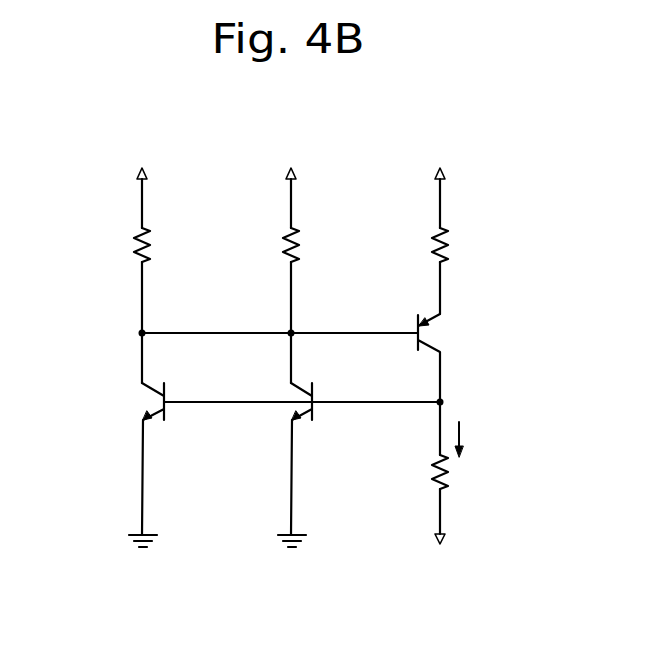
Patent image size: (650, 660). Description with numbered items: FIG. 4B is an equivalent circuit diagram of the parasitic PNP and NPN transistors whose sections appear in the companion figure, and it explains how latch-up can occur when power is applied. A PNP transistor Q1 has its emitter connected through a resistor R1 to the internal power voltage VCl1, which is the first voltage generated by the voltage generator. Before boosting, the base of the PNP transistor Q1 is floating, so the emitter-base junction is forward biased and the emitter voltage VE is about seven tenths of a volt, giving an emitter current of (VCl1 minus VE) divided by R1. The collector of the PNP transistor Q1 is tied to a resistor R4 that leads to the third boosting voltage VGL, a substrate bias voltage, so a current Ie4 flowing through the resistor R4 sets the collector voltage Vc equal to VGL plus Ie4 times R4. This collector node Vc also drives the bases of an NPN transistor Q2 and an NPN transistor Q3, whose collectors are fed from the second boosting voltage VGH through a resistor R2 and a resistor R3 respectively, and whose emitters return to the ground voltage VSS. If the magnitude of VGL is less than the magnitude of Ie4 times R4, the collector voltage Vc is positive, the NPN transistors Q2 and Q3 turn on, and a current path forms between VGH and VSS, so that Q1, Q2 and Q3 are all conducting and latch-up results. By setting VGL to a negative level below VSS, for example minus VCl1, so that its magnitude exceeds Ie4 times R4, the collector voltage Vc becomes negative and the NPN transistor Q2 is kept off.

The resistor R1 is at (425, 245).
The resistor R2 is at (276, 245).
The resistor R3 is at (127, 245).
The resistor R4 is at (424, 472).
The PNP transistor Q1 is at (440, 358).
The NPN transistor Q2 is at (290, 459).
The NPN transistor Q3 is at (142, 459).
The second boosting voltage VGH is at (216, 186).
The internal power voltage VCl1 is at (439, 186).
The ground voltage VSS is at (217, 556).
The third boosting voltage VGL is at (440, 532).
The emitter voltage VE is at (454, 288).
The collector voltage Vc is at (458, 402).
The emitter current Ie4 is at (476, 439).